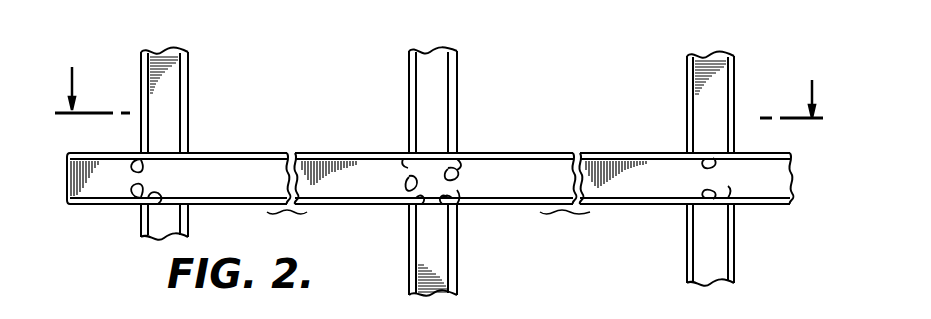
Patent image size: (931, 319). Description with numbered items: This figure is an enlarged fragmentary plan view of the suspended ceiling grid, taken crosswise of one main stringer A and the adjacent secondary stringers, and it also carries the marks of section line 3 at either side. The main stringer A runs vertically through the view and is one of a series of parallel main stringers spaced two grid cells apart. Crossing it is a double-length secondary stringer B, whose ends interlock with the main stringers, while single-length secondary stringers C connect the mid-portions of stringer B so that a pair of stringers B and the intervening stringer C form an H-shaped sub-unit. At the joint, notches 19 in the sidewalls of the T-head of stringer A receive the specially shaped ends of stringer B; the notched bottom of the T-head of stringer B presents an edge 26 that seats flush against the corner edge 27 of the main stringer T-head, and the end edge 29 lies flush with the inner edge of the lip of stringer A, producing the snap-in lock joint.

The section line 3- 3 is at (441, 66).
The main stringer A is at (465, 78).
The double-length secondary stringer B is at (260, 148).
The single length secondary stringer C is at (196, 93).
The notch 19 is at (458, 165).
The edge 26 is at (137, 170).
The corner edge 27 is at (158, 200).
The end edge 29 is at (447, 200).